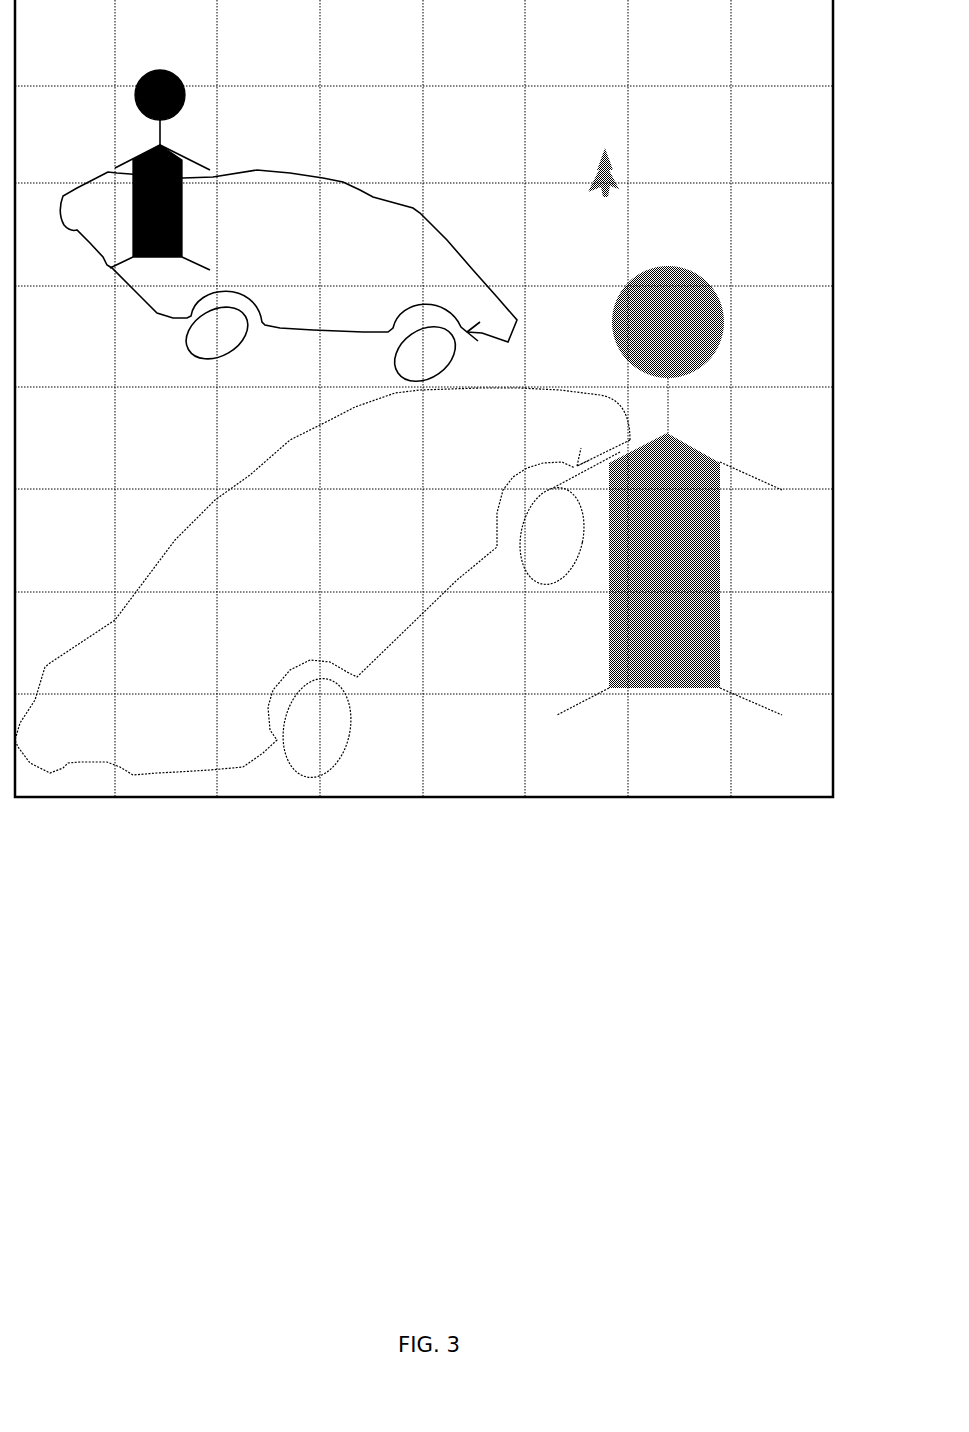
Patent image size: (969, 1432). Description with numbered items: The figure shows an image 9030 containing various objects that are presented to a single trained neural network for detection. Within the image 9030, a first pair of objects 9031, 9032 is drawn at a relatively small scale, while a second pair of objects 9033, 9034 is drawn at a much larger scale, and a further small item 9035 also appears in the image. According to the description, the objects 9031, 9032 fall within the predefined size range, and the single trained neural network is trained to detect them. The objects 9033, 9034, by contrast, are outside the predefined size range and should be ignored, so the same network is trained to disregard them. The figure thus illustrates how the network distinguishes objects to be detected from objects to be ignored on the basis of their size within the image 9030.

The image 9030 is at (433, 895).
The object 9031 is at (181, 222).
The object 9032 is at (357, 184).
The object 9033 is at (689, 560).
The object 9034 is at (145, 579).
The small object 9035 is at (595, 168).